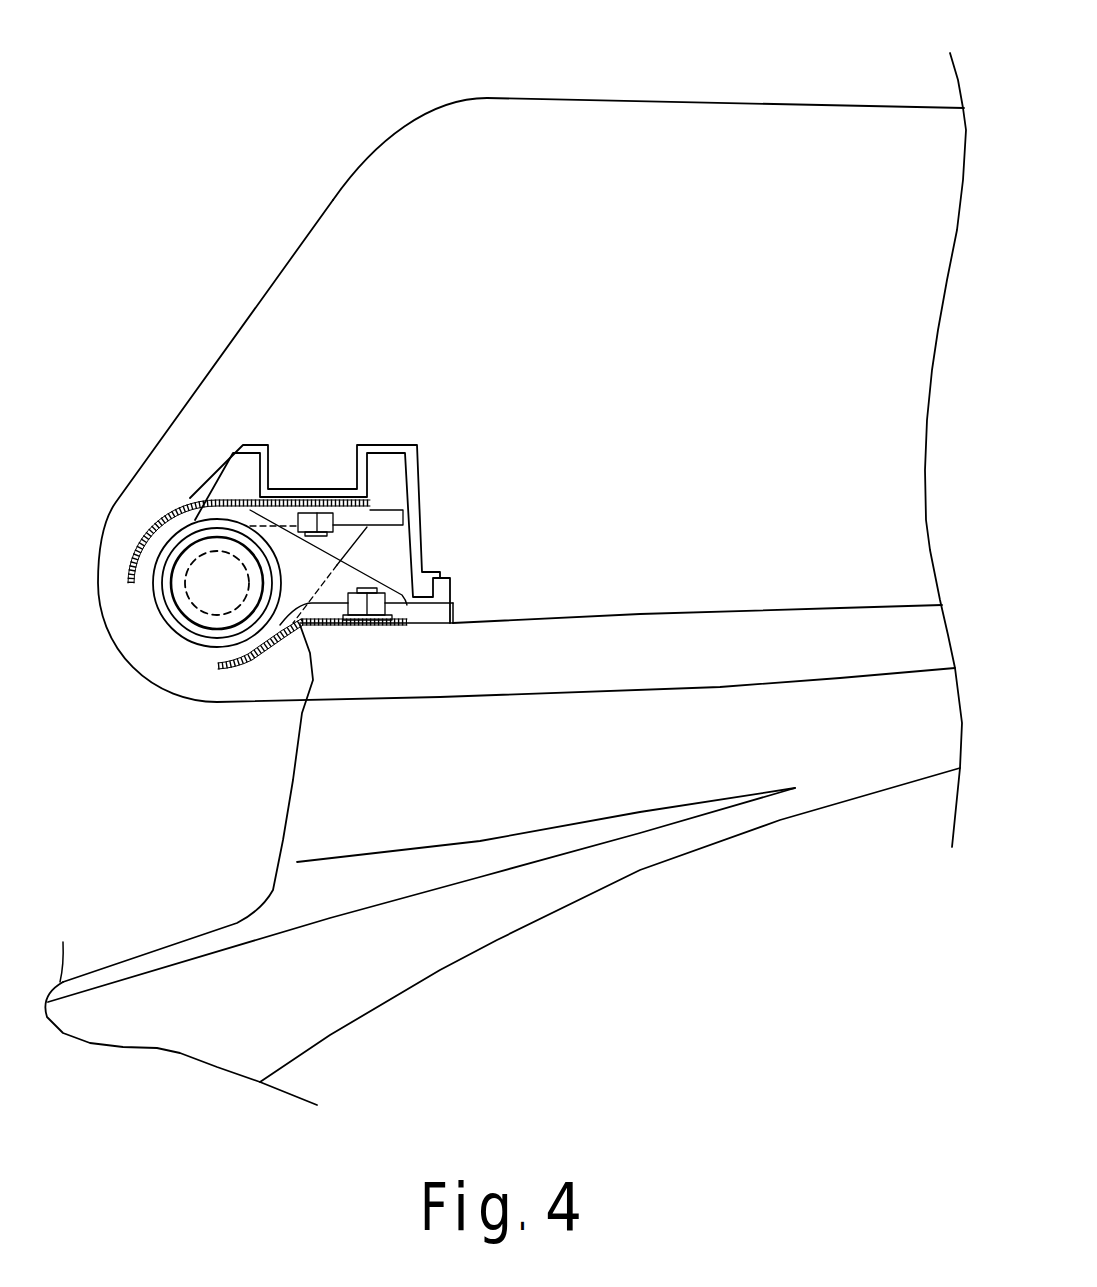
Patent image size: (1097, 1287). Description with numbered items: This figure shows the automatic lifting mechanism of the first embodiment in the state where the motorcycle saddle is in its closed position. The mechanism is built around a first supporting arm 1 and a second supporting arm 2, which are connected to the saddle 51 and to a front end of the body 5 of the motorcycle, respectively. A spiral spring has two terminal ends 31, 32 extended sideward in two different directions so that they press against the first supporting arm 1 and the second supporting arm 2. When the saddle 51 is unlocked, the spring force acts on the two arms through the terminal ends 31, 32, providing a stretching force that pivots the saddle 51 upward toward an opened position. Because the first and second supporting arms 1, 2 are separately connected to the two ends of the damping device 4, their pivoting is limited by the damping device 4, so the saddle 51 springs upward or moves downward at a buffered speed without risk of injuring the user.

The first supporting arm 1 is at (347, 505).
The second supporting arm 2 is at (340, 625).
The terminal end 31 is at (390, 517).
The terminal end 32 is at (405, 608).
The damping device 4 is at (180, 600).
The body 5 is at (345, 782).
The saddle 51 is at (552, 113).